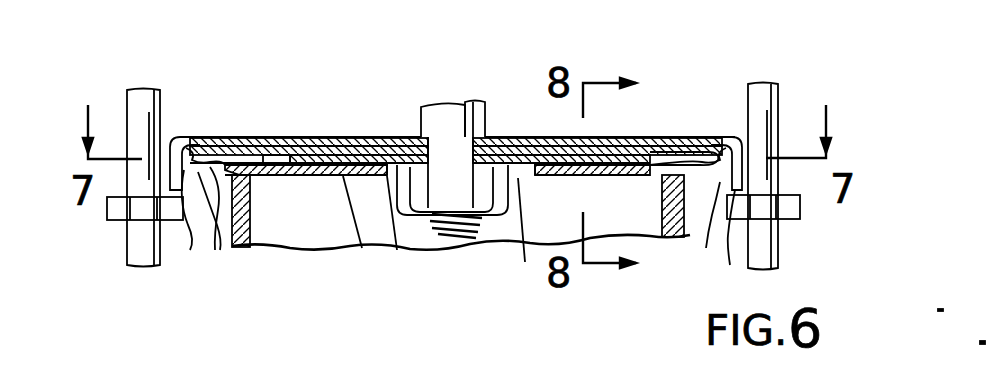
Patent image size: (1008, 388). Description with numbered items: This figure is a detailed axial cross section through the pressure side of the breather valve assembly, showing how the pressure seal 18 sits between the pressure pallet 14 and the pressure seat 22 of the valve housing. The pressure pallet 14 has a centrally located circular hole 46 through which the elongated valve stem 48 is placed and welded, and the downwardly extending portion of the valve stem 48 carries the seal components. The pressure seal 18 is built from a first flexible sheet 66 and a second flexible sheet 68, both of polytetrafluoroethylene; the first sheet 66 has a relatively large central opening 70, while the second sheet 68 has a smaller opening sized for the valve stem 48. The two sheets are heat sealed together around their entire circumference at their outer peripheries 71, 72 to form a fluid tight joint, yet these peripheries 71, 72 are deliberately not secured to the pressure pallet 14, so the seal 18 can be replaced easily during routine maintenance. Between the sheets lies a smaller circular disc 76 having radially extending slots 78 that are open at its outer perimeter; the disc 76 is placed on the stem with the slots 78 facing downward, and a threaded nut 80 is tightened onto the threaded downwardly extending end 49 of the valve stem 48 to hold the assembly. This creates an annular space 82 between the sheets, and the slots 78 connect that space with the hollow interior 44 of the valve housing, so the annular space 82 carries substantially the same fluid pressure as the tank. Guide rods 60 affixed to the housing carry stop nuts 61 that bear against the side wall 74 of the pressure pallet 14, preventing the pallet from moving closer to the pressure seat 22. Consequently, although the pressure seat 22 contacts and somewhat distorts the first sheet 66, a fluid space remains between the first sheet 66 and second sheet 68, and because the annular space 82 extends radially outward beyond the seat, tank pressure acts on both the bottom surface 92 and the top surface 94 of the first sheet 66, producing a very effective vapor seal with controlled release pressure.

The pressure pallet 14 is at (720, 135).
The pressure seal 18 is at (307, 232).
The pressure seat 22 is at (694, 210).
The hollow interior 44 is at (643, 220).
The circular hole 46 is at (437, 140).
The valve stem 48 is at (460, 112).
The threaded downwardly extending end 49 is at (452, 195).
The guide rod 60 is at (141, 110).
The stop nut 61 is at (108, 222).
The first flexible sheet 66 is at (370, 252).
The second flexible sheet 68 is at (660, 150).
The central opening 70 is at (532, 186).
The outer periphery 71 is at (214, 222).
The outer periphery 72 is at (183, 142).
The side wall 74 is at (197, 222).
The disc 76 is at (395, 258).
The radially extending slot 78 is at (526, 264).
The threaded nut 80 is at (463, 236).
The annular space 82 is at (290, 152).
The bottom surface 92 is at (270, 245).
The top surface 94 is at (257, 155).